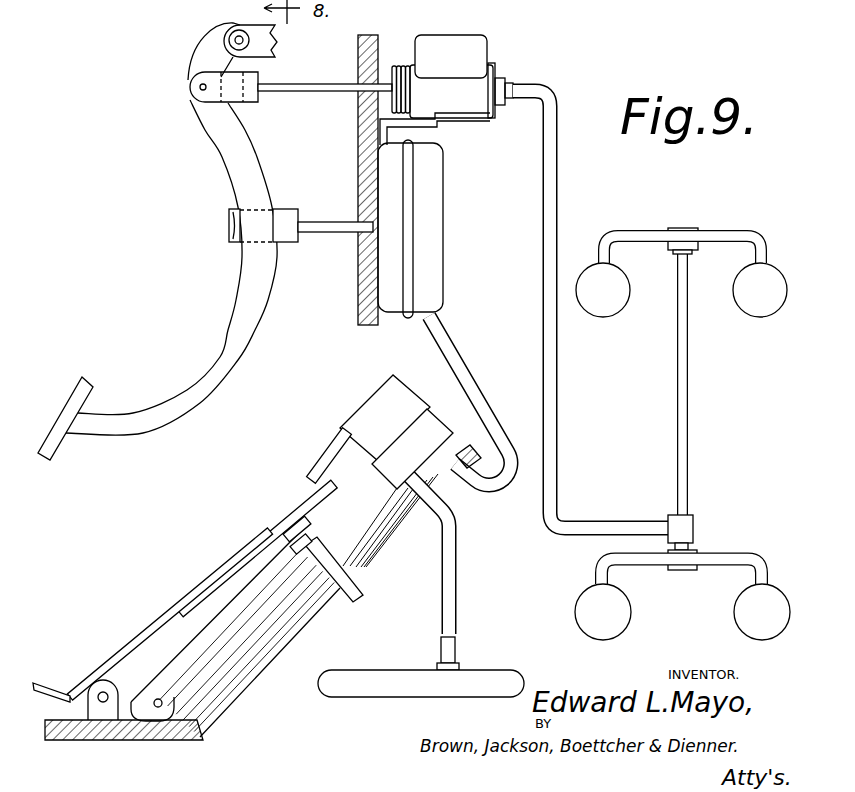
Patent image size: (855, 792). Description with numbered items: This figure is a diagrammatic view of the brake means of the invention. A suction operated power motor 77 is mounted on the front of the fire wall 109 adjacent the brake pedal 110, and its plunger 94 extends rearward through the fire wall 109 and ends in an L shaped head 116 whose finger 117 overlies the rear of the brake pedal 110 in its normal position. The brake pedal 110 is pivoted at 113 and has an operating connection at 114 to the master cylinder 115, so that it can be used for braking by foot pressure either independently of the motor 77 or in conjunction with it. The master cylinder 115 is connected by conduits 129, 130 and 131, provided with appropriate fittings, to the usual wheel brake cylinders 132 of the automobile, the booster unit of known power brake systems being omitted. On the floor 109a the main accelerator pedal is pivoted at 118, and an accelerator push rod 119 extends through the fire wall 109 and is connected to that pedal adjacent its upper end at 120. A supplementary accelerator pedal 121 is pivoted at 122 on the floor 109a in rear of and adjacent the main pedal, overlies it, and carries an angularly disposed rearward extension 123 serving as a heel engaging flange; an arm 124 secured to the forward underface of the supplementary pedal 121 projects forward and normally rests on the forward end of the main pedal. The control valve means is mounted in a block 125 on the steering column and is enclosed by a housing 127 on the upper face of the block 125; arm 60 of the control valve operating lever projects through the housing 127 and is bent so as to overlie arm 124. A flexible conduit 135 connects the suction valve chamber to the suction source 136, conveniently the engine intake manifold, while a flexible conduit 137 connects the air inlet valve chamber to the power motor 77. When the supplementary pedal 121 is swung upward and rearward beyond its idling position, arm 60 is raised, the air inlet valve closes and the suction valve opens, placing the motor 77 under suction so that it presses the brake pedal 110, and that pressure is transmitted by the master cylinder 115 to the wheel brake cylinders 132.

The arm 60 is at (338, 452).
The suction operated power motor 77 is at (453, 243).
The plunger 94 is at (324, 221).
The fire wall 109 is at (358, 300).
The floor 109a is at (153, 745).
The brake pedal 110 is at (234, 313).
The pivot 113 is at (228, 37).
The operating connection 114 is at (196, 85).
The master cylinder 115 is at (477, 107).
The L shaped head 116 is at (293, 244).
The finger 117 is at (228, 222).
The pivot 118 is at (163, 698).
The accelerator push rod 119 is at (358, 603).
The connection 120 is at (293, 556).
The supplementary accelerator pedal 121 is at (160, 611).
The pivot 122 is at (101, 731).
The rearward extension 123 is at (45, 680).
The arm 124 is at (308, 502).
The block 125 is at (395, 466).
The housing 127 is at (380, 398).
The conduit 129 is at (553, 190).
The conduit 130 is at (683, 400).
The conduit 131 is at (727, 232).
The wheel brake cylinders 132 is at (615, 310).
The flexible hose or conduit 135 is at (445, 578).
The suction source 136 is at (390, 683).
The flexible hose or conduit 137 is at (467, 393).